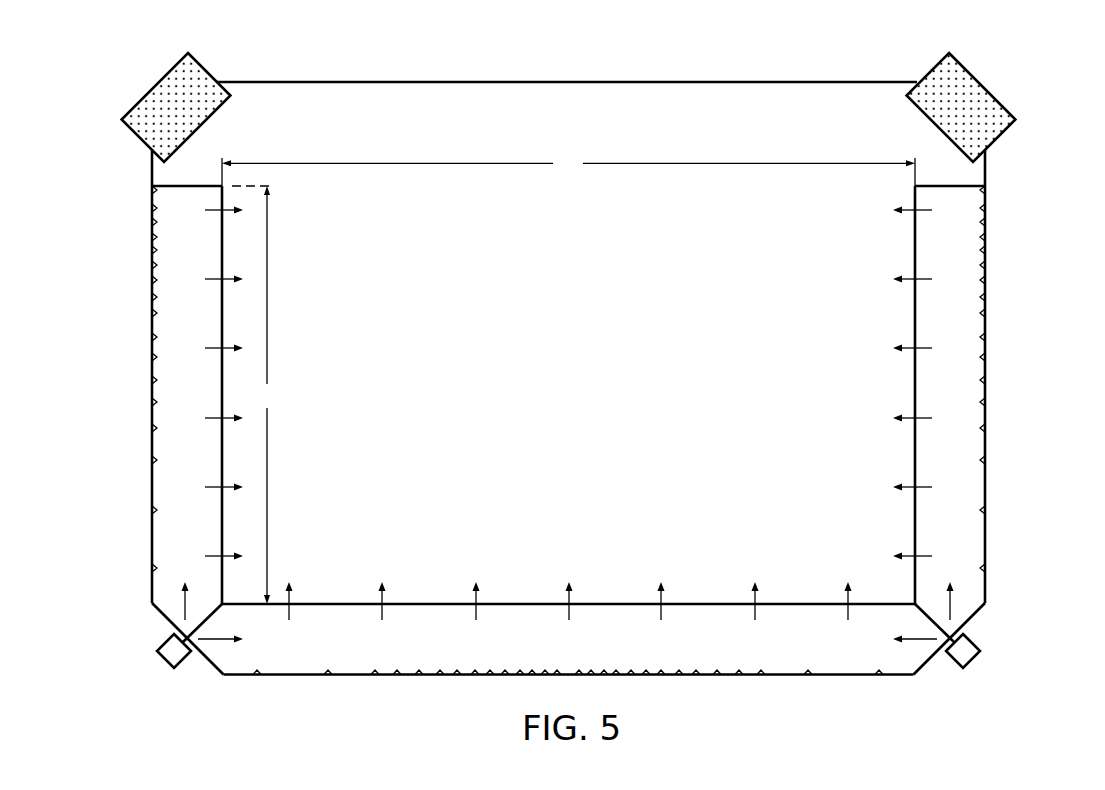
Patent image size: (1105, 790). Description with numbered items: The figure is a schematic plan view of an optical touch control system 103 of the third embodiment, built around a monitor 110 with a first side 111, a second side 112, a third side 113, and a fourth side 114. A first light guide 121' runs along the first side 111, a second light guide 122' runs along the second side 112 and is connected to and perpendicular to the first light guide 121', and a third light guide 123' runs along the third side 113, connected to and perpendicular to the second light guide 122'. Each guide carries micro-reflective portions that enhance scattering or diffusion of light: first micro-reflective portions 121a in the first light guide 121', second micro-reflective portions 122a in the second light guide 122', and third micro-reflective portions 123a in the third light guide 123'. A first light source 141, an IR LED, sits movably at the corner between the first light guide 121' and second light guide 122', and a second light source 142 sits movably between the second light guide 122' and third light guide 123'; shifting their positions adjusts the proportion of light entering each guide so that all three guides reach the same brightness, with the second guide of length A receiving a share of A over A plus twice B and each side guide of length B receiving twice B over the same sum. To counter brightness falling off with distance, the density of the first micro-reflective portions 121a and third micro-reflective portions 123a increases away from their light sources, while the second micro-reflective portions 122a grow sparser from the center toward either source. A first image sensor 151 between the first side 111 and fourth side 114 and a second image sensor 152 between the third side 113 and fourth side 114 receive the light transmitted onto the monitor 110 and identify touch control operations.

The optical touch control system 103 is at (98, 47).
The monitor 110 is at (730, 96).
The first side 111 is at (152, 176).
The second side 112 is at (452, 604).
The third side 113 is at (985, 176).
The fourth side 114 is at (405, 81).
The first light guide 121' is at (138, 377).
The first micro-reflective portions 121a is at (152, 208).
The second light guide 122' is at (568, 674).
The second micro-reflective portions 122a is at (328, 676).
The third light guide 123' is at (1000, 377).
The third micro-reflective portions 123a is at (985, 208).
The first light source 141 is at (157, 652).
The second light source 142 is at (979, 655).
The first image sensor 151 is at (152, 88).
The second image sensor 152 is at (985, 88).